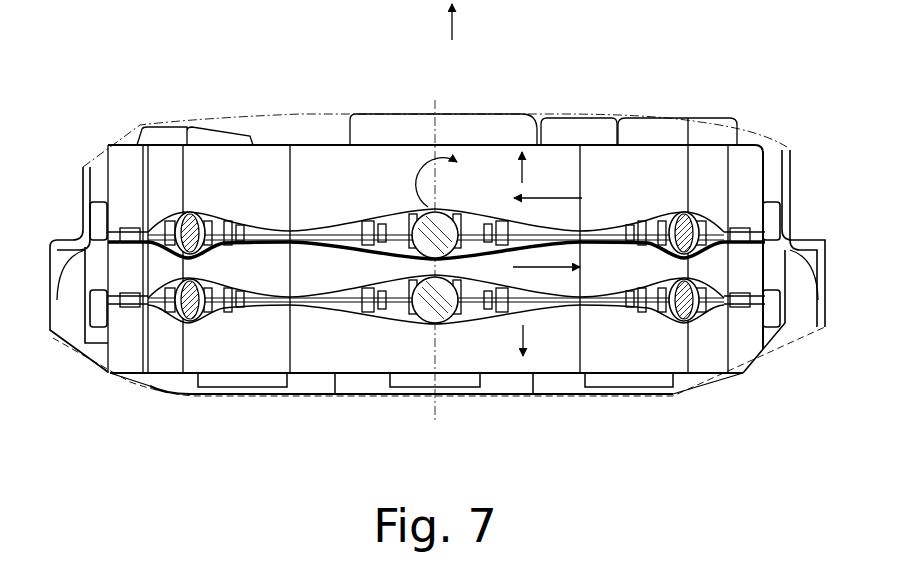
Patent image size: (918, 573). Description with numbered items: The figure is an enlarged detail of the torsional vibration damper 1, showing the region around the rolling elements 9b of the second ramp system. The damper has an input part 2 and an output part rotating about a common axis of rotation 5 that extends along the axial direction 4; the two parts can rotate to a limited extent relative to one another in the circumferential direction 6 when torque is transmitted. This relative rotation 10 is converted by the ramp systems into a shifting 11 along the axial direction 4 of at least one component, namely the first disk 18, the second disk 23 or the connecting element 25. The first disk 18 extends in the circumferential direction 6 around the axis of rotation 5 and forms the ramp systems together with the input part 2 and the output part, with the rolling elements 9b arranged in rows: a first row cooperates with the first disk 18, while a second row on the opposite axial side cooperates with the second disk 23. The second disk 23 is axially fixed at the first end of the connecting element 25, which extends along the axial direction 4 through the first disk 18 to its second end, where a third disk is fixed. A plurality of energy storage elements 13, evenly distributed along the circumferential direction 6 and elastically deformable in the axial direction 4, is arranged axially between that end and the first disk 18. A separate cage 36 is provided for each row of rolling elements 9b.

The torsional vibration damper 1 is at (749, 81).
The input part 2 is at (585, 392).
The axial direction 4 is at (462, 20).
The axis of rotation 5 is at (427, 408).
The circumferential direction 6 is at (431, 182).
The rolling elements 9b is at (198, 214).
The relative rotation 10 is at (547, 248).
The shifting 11 is at (539, 254).
The energy storage elements 13 is at (176, 132).
The first disk 18 is at (560, 206).
The second disk 23 is at (222, 380).
The connecting element 25 is at (270, 386).
The cage 36 is at (226, 230).